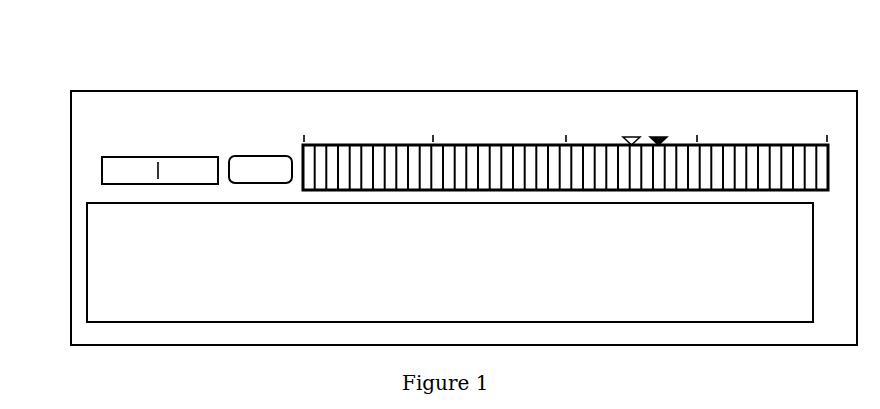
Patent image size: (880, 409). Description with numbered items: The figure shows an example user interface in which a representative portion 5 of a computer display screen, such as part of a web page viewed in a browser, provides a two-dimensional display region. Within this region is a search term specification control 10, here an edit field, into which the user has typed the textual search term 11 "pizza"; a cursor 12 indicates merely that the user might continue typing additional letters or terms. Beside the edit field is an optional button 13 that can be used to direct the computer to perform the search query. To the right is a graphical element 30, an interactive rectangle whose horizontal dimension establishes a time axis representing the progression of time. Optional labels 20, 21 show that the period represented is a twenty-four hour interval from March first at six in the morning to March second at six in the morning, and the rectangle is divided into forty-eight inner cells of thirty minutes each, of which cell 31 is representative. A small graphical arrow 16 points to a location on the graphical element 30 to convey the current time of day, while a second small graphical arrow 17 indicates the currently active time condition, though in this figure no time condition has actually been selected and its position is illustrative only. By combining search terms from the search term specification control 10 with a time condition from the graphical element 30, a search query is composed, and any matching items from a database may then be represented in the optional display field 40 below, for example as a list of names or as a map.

The representative portion of a computer display screen 5 is at (71, 192).
The search term specification control 10 is at (100, 166).
The textual search term 11 is at (123, 165).
The cursor 12 is at (157, 165).
The button 13 is at (257, 157).
The label 20 is at (282, 107).
The label 21 is at (433, 117).
The graphical element 30 is at (388, 145).
The cell 31 is at (417, 155).
The graphical arrow 16 is at (631, 137).
The graphical arrow 17 is at (659, 140).
The display field 40 is at (87, 283).